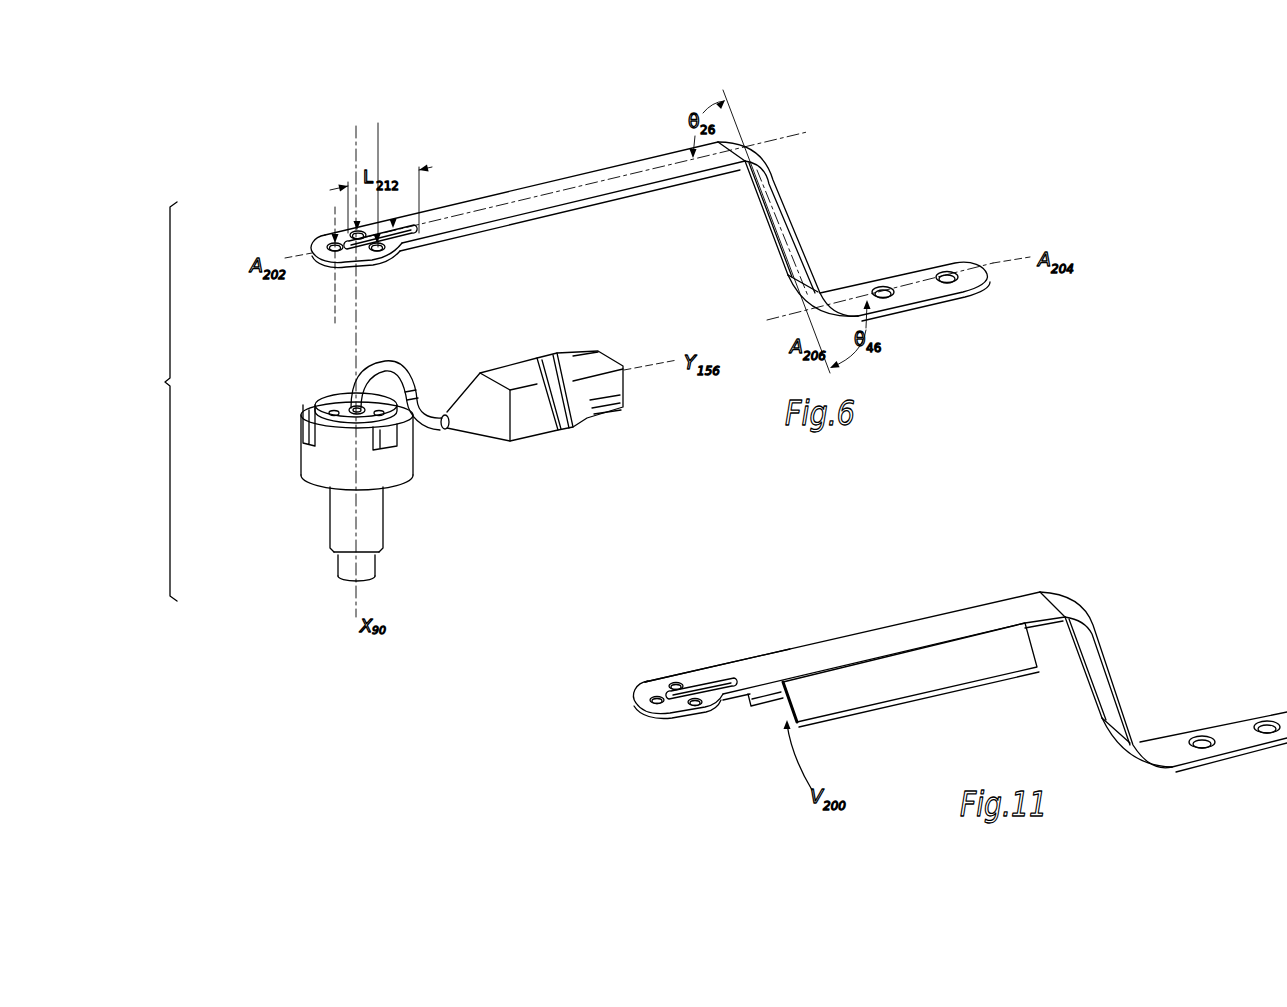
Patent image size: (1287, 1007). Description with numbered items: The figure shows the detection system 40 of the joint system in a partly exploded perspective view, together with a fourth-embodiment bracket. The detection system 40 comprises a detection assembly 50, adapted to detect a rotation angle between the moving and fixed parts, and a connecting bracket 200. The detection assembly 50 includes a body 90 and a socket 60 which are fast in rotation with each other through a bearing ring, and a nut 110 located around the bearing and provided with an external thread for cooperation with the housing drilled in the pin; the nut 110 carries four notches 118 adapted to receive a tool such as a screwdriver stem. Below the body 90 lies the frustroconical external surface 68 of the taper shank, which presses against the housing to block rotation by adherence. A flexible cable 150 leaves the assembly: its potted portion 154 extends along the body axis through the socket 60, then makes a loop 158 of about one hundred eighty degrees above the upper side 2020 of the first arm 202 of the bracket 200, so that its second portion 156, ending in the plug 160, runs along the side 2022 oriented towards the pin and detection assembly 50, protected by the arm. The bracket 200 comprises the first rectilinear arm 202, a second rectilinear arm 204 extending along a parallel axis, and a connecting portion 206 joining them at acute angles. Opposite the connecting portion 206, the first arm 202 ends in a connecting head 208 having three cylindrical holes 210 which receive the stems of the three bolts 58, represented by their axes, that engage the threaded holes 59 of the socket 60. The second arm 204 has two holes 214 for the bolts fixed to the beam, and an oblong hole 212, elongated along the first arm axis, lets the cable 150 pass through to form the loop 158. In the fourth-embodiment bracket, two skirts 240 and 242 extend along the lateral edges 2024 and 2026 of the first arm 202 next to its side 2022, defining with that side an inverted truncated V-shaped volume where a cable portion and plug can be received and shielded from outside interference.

In FIG. 6, the detection system 40 is at (157, 401).
In FIG. 6, the detection assembly 50 is at (323, 493).
In FIG. 6, the bolts 58 is at (379, 143).
In FIG. 6, the threaded holes 59 is at (333, 406).
In FIG. 6, the socket 60 is at (306, 432).
In FIG. 6, the external surface 68 is at (365, 565).
In FIG. 6, the body 90 is at (346, 556).
In FIG. 6, the nut 110 is at (341, 496).
In FIG. 6, the notches 118 is at (387, 440).
In FIG. 6, the flexible cable 150 is at (430, 432).
In FIG. 6, the portion of cable 154 is at (350, 412).
In FIG. 6, the second portion of cable 156 is at (433, 428).
In FIG. 6, the loop 158 is at (397, 368).
In FIG. 6, the plug 160 is at (547, 413).
In FIG. 6, the connecting bracket 200 is at (645, 216).
In FIG. 11, the connecting bracket 200 is at (920, 651).
In FIG. 6, the first rectilinear arm 202 is at (535, 209).
In FIG. 11, the first rectilinear arm 202 is at (912, 650).
In FIG. 6, the second rectilinear arm 204 is at (934, 253).
In FIG. 11, the second rectilinear arm 204 is at (1230, 728).
In FIG. 6, the connecting portion 206 is at (768, 214).
In FIG. 11, the connecting portion 206 is at (1102, 700).
In FIG. 6, the connecting head 208 is at (367, 266).
In FIG. 11, the connecting head 208 is at (645, 670).
In FIG. 6, the cylindrical holes 210 is at (370, 228).
In FIG. 6, the oblong hole 212 is at (393, 218).
In FIG. 11, the oblong hole 212 is at (700, 683).
In FIG. 6, the holes 214 is at (883, 292).
In FIG. 11, the skirt 240 is at (903, 687).
In FIG. 11, the skirt 242 is at (763, 698).
In FIG. 6, the upper side 2020 is at (640, 172).
In FIG. 11, the upper side 2020 is at (985, 617).
In FIG. 6, the side 2022 is at (643, 197).
In FIG. 11, the side 2022 is at (1045, 627).
In FIG. 11, the lateral edge 2024 is at (770, 685).
In FIG. 11, the lateral edge 2026 is at (740, 660).